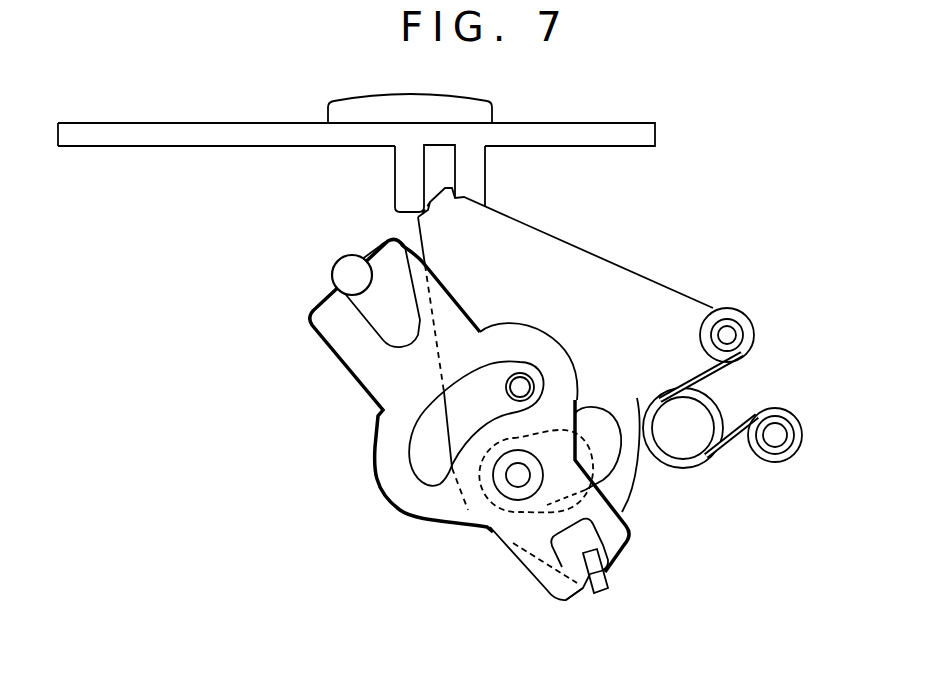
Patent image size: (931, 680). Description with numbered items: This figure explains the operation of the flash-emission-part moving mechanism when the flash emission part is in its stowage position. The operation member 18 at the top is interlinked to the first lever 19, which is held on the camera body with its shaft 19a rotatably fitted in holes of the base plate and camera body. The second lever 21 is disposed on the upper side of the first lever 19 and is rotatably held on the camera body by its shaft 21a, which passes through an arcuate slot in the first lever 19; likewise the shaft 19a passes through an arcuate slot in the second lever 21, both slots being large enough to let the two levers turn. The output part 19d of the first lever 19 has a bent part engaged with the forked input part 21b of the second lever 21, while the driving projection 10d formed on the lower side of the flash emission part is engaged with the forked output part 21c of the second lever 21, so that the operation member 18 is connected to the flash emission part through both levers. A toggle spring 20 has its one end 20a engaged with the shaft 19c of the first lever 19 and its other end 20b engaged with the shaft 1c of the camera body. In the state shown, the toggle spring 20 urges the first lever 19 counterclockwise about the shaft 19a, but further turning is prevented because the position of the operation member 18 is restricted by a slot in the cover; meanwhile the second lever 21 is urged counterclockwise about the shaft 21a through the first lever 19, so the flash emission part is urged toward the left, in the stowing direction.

The operation member 18 is at (473, 113).
The driving projection 10d is at (350, 272).
The first lever 19 is at (632, 288).
The shaft 19a is at (523, 377).
The shaft 19c is at (727, 335).
The output part 19d is at (608, 580).
The toggle spring 20 is at (688, 465).
The one end 20a is at (745, 347).
The other end 20b is at (780, 462).
The shaft 1c is at (777, 435).
The second lever 21 is at (357, 358).
The shaft 21a is at (518, 478).
The input part 21b is at (580, 585).
The output part 21c is at (328, 308).